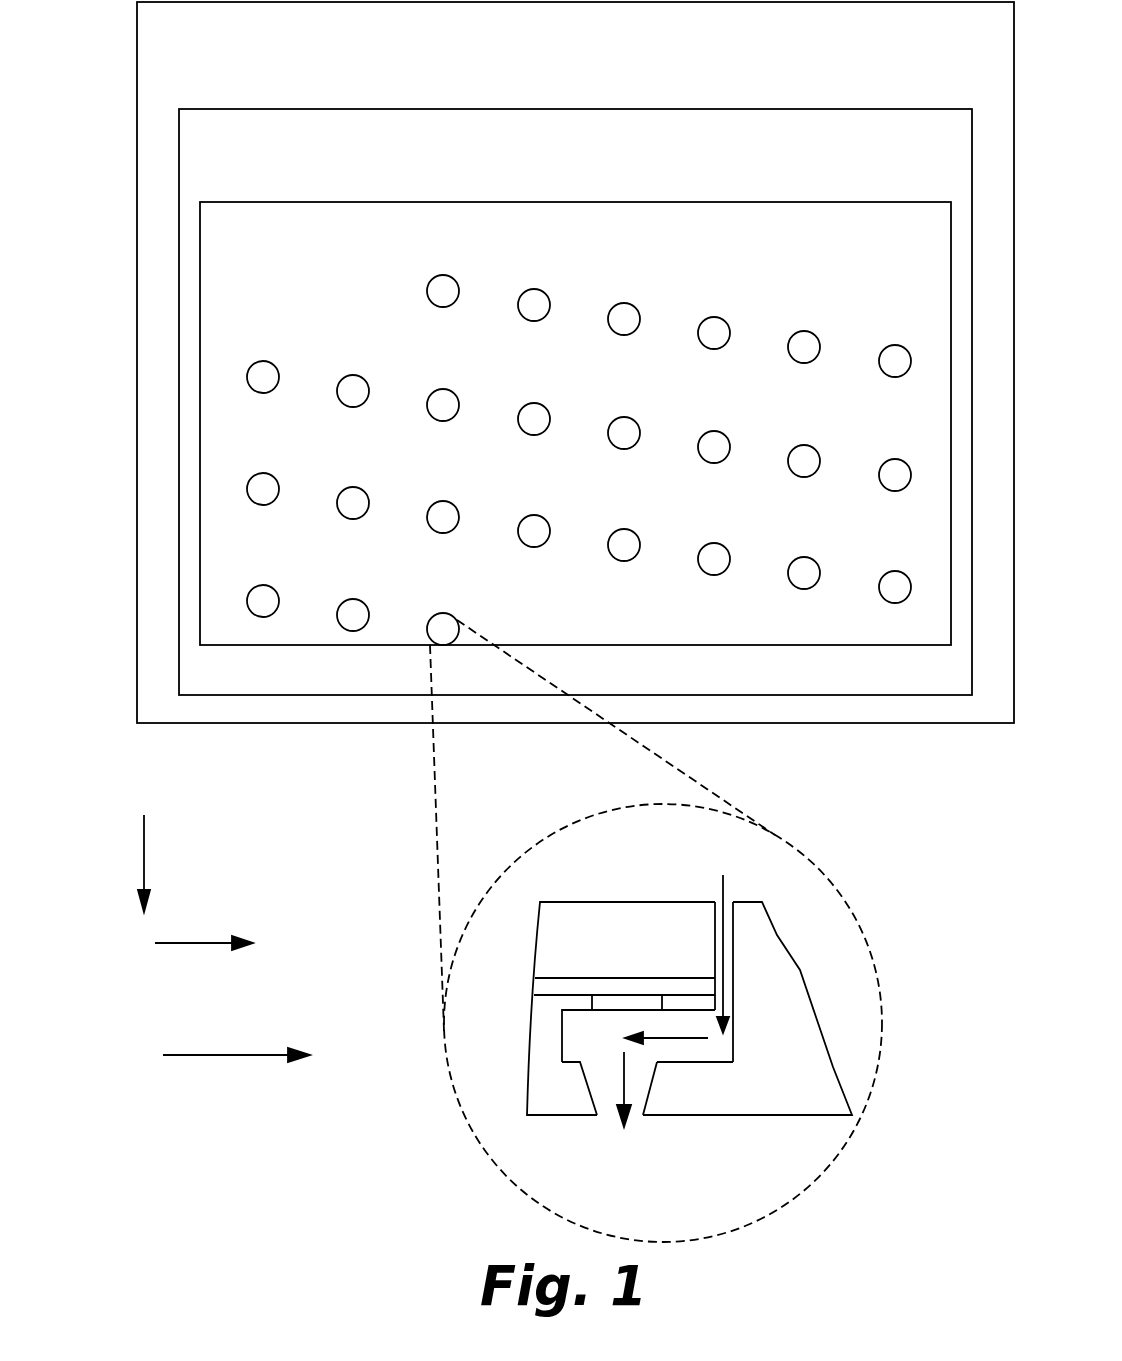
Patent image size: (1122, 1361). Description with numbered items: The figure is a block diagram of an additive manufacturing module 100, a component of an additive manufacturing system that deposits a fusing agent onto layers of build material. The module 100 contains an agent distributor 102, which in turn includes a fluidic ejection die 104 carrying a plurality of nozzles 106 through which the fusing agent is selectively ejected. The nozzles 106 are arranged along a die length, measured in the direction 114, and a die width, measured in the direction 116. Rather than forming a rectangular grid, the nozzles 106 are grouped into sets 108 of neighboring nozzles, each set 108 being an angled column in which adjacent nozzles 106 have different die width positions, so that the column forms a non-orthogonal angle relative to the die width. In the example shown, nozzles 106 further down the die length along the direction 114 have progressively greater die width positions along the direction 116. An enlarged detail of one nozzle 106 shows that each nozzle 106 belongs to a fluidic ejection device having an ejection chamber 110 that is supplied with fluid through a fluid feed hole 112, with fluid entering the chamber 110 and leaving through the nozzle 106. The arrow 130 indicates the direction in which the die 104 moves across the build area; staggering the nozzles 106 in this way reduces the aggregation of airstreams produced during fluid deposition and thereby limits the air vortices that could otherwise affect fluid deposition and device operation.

The additive manufacturing module 100 is at (557, 63).
The agent distributor 102 is at (557, 170).
The fluidic ejection die 104 is at (557, 262).
The nozzle 106 is at (427, 633).
The set of neighboring nozzles 108 is at (460, 418).
The ejection chamber 110 is at (593, 1035).
The fluid feed hole 112 is at (727, 955).
The direction 114 is at (145, 863).
The direction 116 is at (207, 943).
The arrow 130 is at (228, 1055).